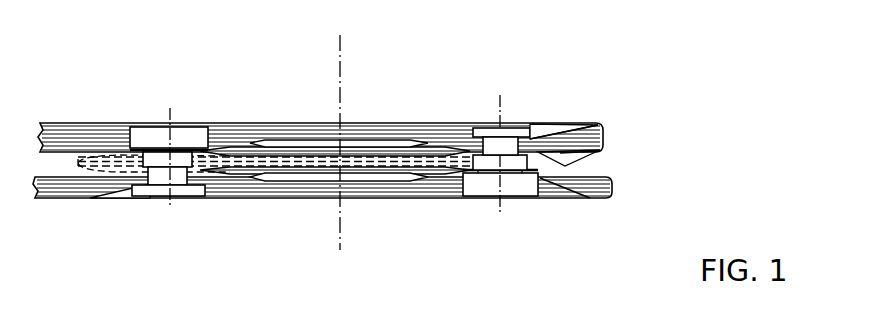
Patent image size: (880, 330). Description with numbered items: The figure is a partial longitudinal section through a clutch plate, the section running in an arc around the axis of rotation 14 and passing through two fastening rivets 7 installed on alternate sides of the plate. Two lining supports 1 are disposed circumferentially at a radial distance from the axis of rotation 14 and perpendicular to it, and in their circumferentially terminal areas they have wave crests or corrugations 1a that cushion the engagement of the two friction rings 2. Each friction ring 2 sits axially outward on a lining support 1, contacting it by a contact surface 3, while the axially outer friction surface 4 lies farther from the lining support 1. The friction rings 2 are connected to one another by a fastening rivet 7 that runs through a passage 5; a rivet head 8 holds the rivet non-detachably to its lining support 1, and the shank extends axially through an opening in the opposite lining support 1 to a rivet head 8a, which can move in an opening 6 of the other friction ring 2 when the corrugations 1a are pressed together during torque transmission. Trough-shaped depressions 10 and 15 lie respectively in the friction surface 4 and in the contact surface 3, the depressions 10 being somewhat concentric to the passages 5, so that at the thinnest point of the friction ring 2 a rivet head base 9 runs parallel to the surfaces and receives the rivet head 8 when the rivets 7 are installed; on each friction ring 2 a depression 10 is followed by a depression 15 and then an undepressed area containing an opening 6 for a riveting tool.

The lining support 1 is at (378, 156).
The corrugations 1a is at (600, 133).
The friction ring 2 is at (388, 133).
The contact surface 3 is at (598, 152).
The friction surface 4 is at (246, 123).
The passage 5 is at (509, 142).
The opening 6 is at (150, 140).
The fastening rivet 7 is at (185, 158).
The rivet head 8 is at (486, 136).
The rivet head 8a is at (488, 197).
The rivet head base 9 is at (120, 193).
The trough-shaped depression 10 is at (557, 120).
The axis of rotation 14 is at (338, 68).
The trough-shaped depression 15 is at (305, 148).